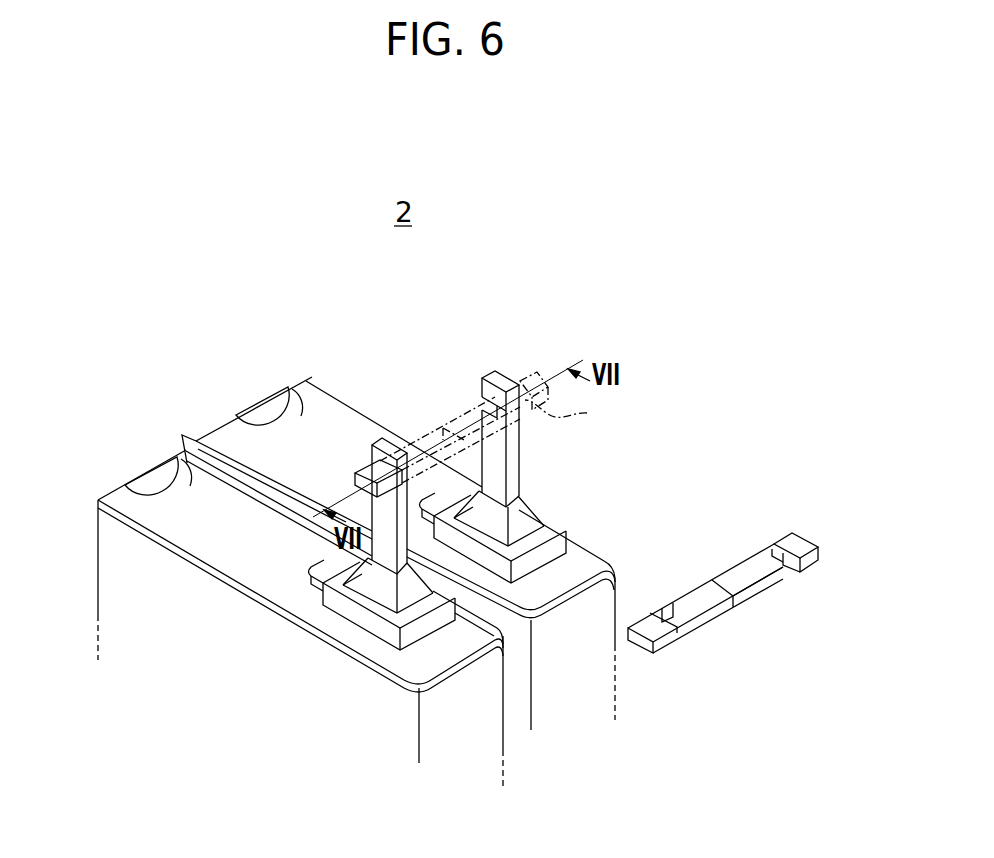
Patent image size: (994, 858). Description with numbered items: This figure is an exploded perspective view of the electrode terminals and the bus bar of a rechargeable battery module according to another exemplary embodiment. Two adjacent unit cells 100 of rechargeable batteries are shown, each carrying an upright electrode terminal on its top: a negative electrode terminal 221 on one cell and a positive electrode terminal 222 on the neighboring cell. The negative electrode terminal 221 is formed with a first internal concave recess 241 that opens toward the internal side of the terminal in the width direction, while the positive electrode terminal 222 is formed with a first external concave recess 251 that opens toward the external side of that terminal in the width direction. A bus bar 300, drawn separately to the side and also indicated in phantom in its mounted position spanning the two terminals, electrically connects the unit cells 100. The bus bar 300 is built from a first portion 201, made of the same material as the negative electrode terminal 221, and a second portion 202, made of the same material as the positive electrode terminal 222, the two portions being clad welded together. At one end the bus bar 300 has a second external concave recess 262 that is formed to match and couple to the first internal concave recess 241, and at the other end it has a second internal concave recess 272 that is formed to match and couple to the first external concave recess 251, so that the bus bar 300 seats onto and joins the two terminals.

The unit cells 100 is at (470, 728).
The negative electrode terminal 221 is at (496, 372).
The positive electrode terminal 222 is at (383, 436).
The first internal concave recess 241 is at (482, 401).
The first external concave recess 251 is at (382, 475).
The bus bar 300 is at (599, 522).
The first portion 201 is at (757, 578).
The second portion 202 is at (692, 611).
The second external concave recess 262 is at (789, 530).
The second internal concave recess 272 is at (665, 608).